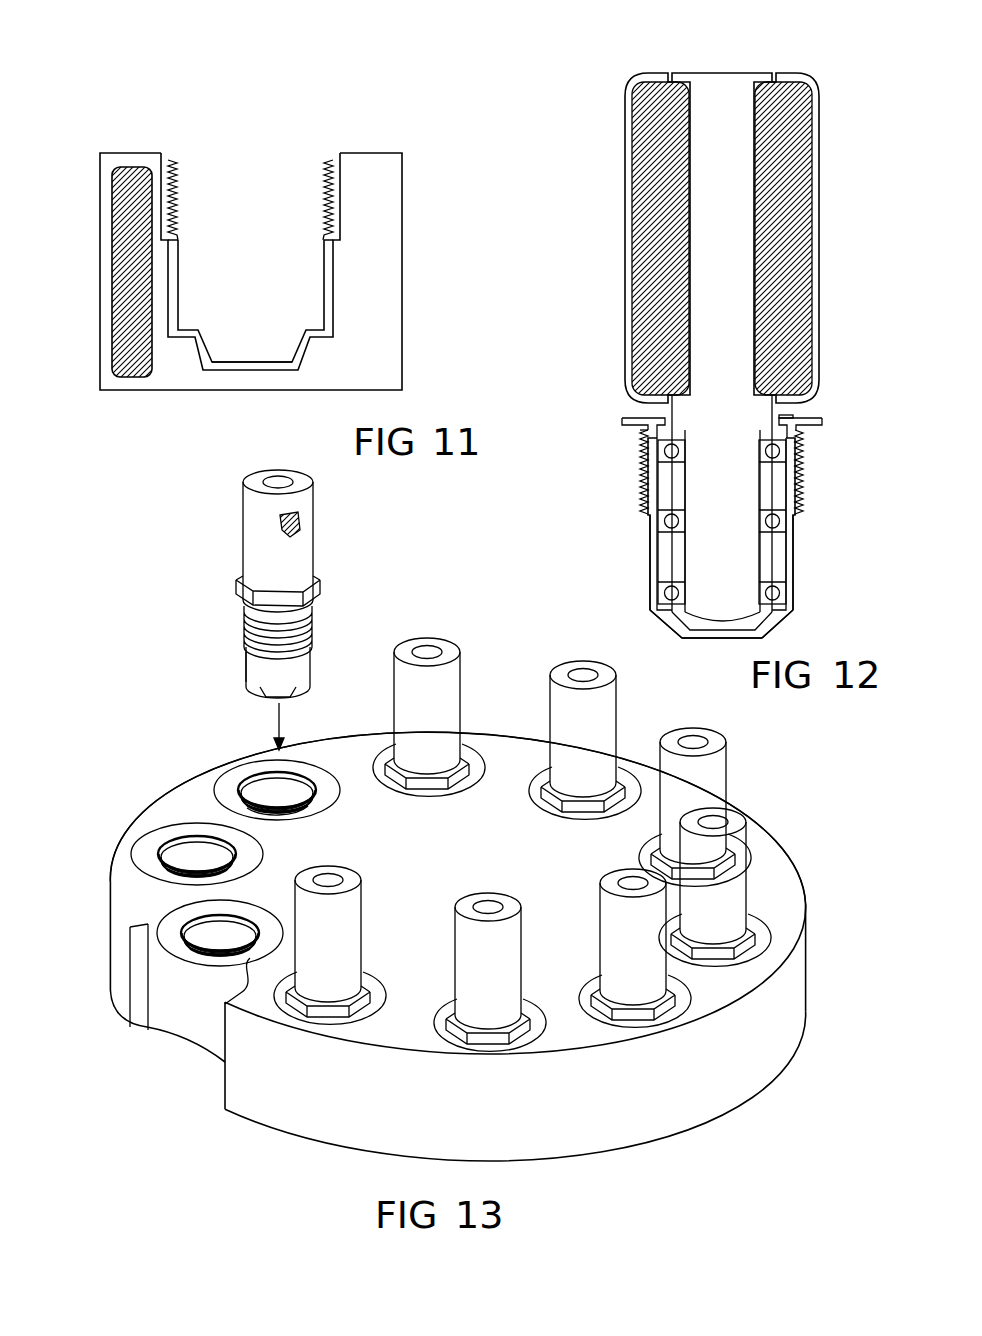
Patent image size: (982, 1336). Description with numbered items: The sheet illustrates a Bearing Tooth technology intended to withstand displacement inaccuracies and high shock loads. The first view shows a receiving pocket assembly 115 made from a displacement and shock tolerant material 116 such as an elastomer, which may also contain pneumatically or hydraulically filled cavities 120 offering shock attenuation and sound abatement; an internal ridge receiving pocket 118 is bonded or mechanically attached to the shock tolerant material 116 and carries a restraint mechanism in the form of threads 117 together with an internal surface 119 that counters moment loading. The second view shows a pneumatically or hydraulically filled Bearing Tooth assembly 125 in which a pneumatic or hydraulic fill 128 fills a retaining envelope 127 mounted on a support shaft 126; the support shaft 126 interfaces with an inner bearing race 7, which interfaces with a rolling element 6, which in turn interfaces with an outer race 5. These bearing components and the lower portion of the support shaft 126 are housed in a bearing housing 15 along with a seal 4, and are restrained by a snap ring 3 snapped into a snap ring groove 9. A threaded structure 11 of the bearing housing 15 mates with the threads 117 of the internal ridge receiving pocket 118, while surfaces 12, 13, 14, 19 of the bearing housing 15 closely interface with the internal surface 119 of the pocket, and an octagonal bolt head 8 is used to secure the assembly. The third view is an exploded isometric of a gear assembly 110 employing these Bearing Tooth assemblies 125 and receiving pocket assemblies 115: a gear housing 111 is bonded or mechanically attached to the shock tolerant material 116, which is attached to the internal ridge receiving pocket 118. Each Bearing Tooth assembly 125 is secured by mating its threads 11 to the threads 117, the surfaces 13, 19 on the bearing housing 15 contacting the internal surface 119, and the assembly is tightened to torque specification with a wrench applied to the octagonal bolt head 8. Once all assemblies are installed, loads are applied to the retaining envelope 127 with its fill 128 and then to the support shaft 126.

In FIG. 12, the snap ring 3 is at (622, 421).
In FIG. 12, the seal 4 is at (645, 446).
In FIG. 12, the outer race 5 is at (793, 568).
In FIG. 12, the rolling element 6 is at (658, 562).
In FIG. 12, the inner bearing race 7 is at (647, 497).
In FIG. 12, the octagonal bolt head 8 is at (822, 423).
In FIG. 13, the octagonal bolt head 8 is at (318, 597).
In FIG. 12, the snap ring groove 9 is at (800, 416).
In FIG. 12, the threaded structure 11 is at (804, 461).
In FIG. 13, the threaded structure 11 is at (313, 628).
In FIG. 12, the surface 12 is at (665, 611).
In FIG. 12, the surface 13 is at (770, 626).
In FIG. 13, the surface 13 is at (298, 690).
In FIG. 12, the surface 14 is at (735, 639).
In FIG. 12, the bearing housing 15 is at (652, 590).
In FIG. 13, the bearing housing 15 is at (243, 650).
In FIG. 12, the surface 19 is at (803, 590).
In FIG. 13, the surface 19 is at (313, 660).
In FIG. 13, the gear assembly 110 is at (205, 1158).
In FIG. 13, the gear housing 111 is at (753, 1093).
In FIG. 11, the receiving pocket assembly 115 is at (495, 345).
In FIG. 13, the receiving pocket assembly 115 is at (212, 760).
In FIG. 11, the displacement and shock tolerant material 116 is at (402, 195).
In FIG. 13, the displacement and shock tolerant material 116 is at (227, 787).
In FIG. 11, the threads 117 is at (180, 181).
In FIG. 13, the threads 117 is at (262, 743).
In FIG. 11, the internal ridge receiving pocket 118 is at (340, 282).
In FIG. 13, the internal ridge receiving pocket 118 is at (240, 777).
In FIG. 11, the internal surface 119 is at (223, 360).
In FIG. 13, the internal surface 119 is at (277, 808).
In FIG. 11, the pneumatically or hydraulically filled cavity 120 is at (110, 205).
In FIG. 12, the Bearing Tooth assembly 125 is at (602, 368).
In FIG. 13, the Bearing Tooth assembly 125 is at (530, 688).
In FIG. 12, the support shaft 126 is at (731, 73).
In FIG. 13, the support shaft 126 is at (270, 478).
In FIG. 12, the retaining envelope 127 is at (817, 106).
In FIG. 13, the retaining envelope 127 is at (313, 543).
In FIG. 12, the pneumatic or hydraulic fill 128 is at (793, 150).
In FIG. 13, the pneumatic or hydraulic fill 128 is at (300, 523).